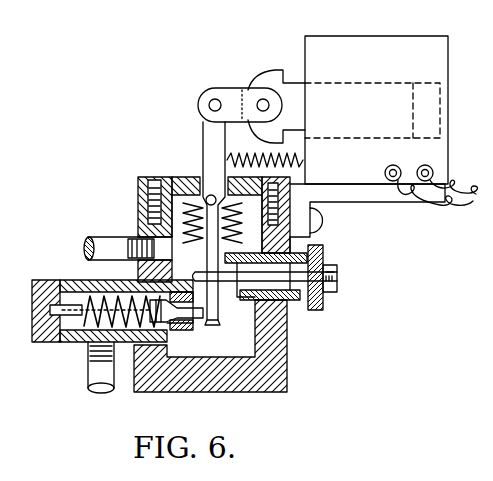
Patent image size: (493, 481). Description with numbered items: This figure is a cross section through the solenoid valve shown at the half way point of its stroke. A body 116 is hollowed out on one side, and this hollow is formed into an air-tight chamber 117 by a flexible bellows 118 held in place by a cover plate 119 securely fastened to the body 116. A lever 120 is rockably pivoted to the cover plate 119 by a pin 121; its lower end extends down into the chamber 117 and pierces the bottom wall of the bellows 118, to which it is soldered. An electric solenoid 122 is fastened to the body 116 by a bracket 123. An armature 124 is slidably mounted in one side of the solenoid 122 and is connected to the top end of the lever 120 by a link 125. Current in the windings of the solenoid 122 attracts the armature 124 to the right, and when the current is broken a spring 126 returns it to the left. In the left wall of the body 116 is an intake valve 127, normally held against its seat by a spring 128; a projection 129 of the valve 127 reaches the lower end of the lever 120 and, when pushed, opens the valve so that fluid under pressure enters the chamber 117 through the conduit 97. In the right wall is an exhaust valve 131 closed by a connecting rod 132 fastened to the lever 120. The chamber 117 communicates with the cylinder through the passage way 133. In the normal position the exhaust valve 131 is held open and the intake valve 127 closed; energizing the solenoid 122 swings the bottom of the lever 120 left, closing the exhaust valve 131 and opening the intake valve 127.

The conduit 97 is at (88, 370).
The body 116 is at (283, 348).
The air-tight chamber 117 is at (260, 267).
The flexible bellows 118 is at (168, 230).
The cover plate 119 is at (140, 185).
The lever 120 is at (205, 133).
The pin 121 is at (208, 195).
The electric solenoid 122 is at (391, 120).
The bracket 123 is at (345, 197).
The armature 124 is at (293, 85).
The link 125 is at (228, 90).
The spring 126 is at (300, 161).
The intake valve 127 is at (160, 318).
The spring 128 is at (87, 287).
The projection 129 is at (192, 325).
The exhaust valve 131 is at (325, 256).
The connecting rod 132 is at (283, 280).
The passage way 133 is at (86, 242).